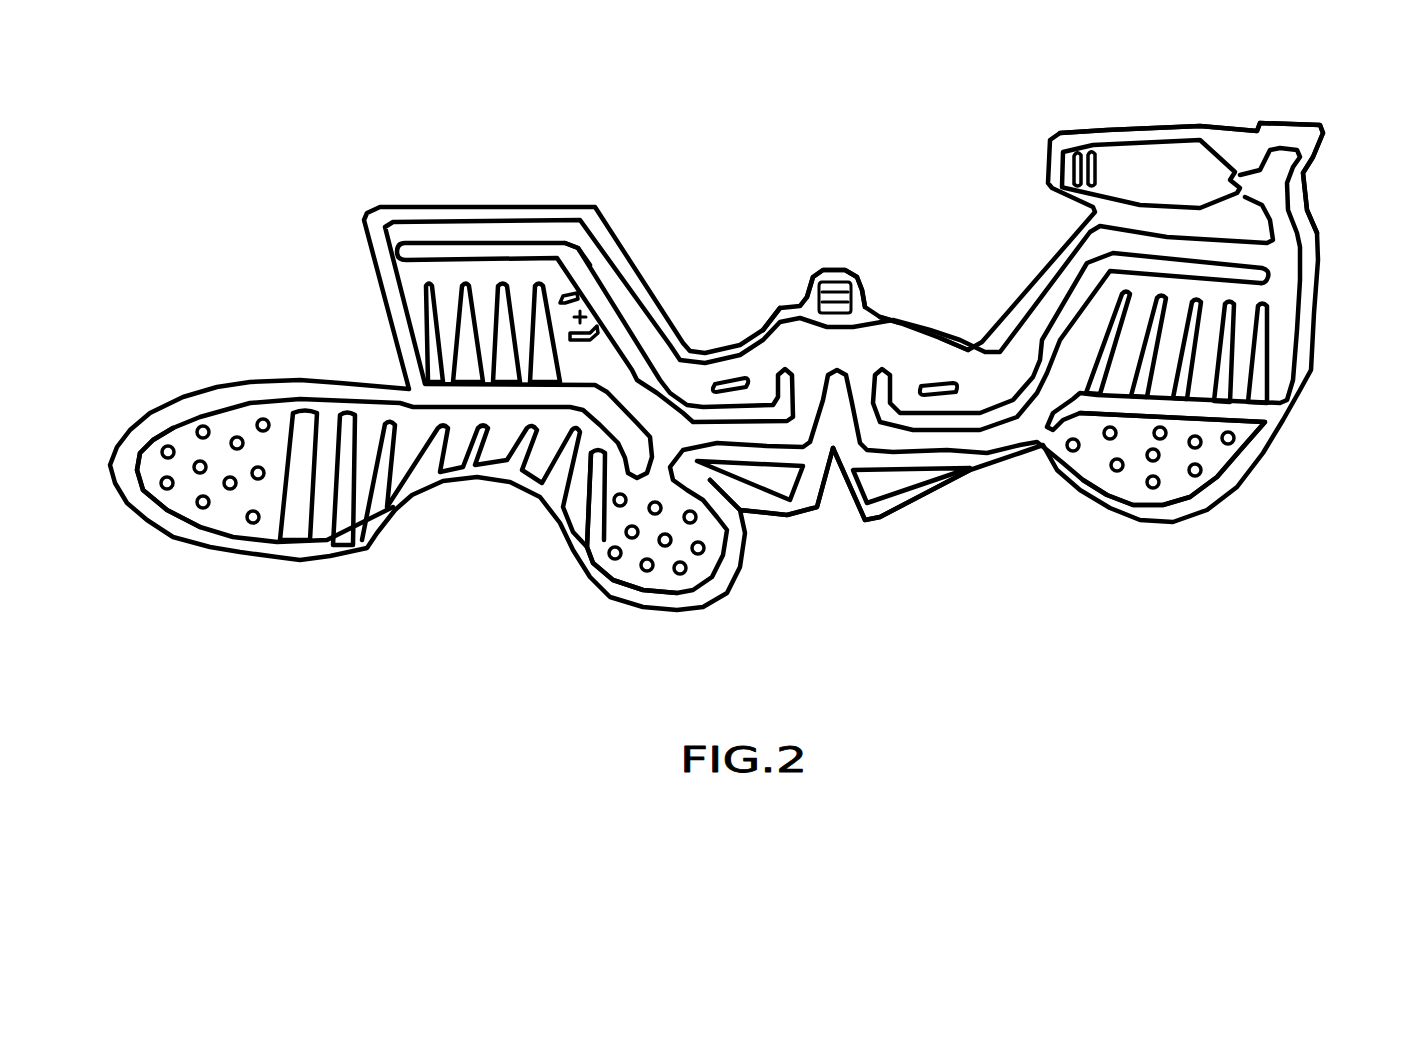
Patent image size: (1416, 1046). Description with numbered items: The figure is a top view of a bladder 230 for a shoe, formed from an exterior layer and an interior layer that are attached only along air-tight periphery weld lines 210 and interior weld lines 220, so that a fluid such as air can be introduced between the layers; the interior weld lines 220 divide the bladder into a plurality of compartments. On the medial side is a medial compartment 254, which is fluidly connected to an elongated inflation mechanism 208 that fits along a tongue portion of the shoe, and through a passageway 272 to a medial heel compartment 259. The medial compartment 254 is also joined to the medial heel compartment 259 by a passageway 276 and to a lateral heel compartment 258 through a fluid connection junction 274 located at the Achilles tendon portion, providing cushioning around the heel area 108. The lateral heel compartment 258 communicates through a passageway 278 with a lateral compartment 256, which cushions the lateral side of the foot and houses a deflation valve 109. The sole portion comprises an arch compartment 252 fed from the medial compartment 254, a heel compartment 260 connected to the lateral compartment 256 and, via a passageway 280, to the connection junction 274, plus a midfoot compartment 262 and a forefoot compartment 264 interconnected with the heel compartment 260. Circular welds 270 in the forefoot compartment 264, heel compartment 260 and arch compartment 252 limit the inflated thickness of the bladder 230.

The bladder 230 is at (263, 203).
The periphery weld lines 210 is at (403, 210).
The interior weld lines 220 is at (430, 318).
The lateral compartment 256 is at (483, 290).
The passageway 278 is at (568, 236).
The medial compartment 254 is at (1207, 322).
The passageway 272 is at (1237, 252).
The lateral heel compartment 258 is at (693, 380).
The medial heel compartment 259 is at (960, 340).
The fluid connection junction 274 is at (860, 330).
The passageway 280 is at (773, 437).
The passageway 276 is at (913, 443).
The midfoot compartment 262 is at (503, 450).
The heel compartment 260 is at (670, 565).
The forefoot compartment 264 is at (230, 513).
The arch compartment 252 is at (1178, 482).
The welds 270 is at (203, 426).
The inflation mechanism 208 is at (1113, 157).
The deflation valve 109 is at (590, 323).
The heel area 108 is at (753, 300).